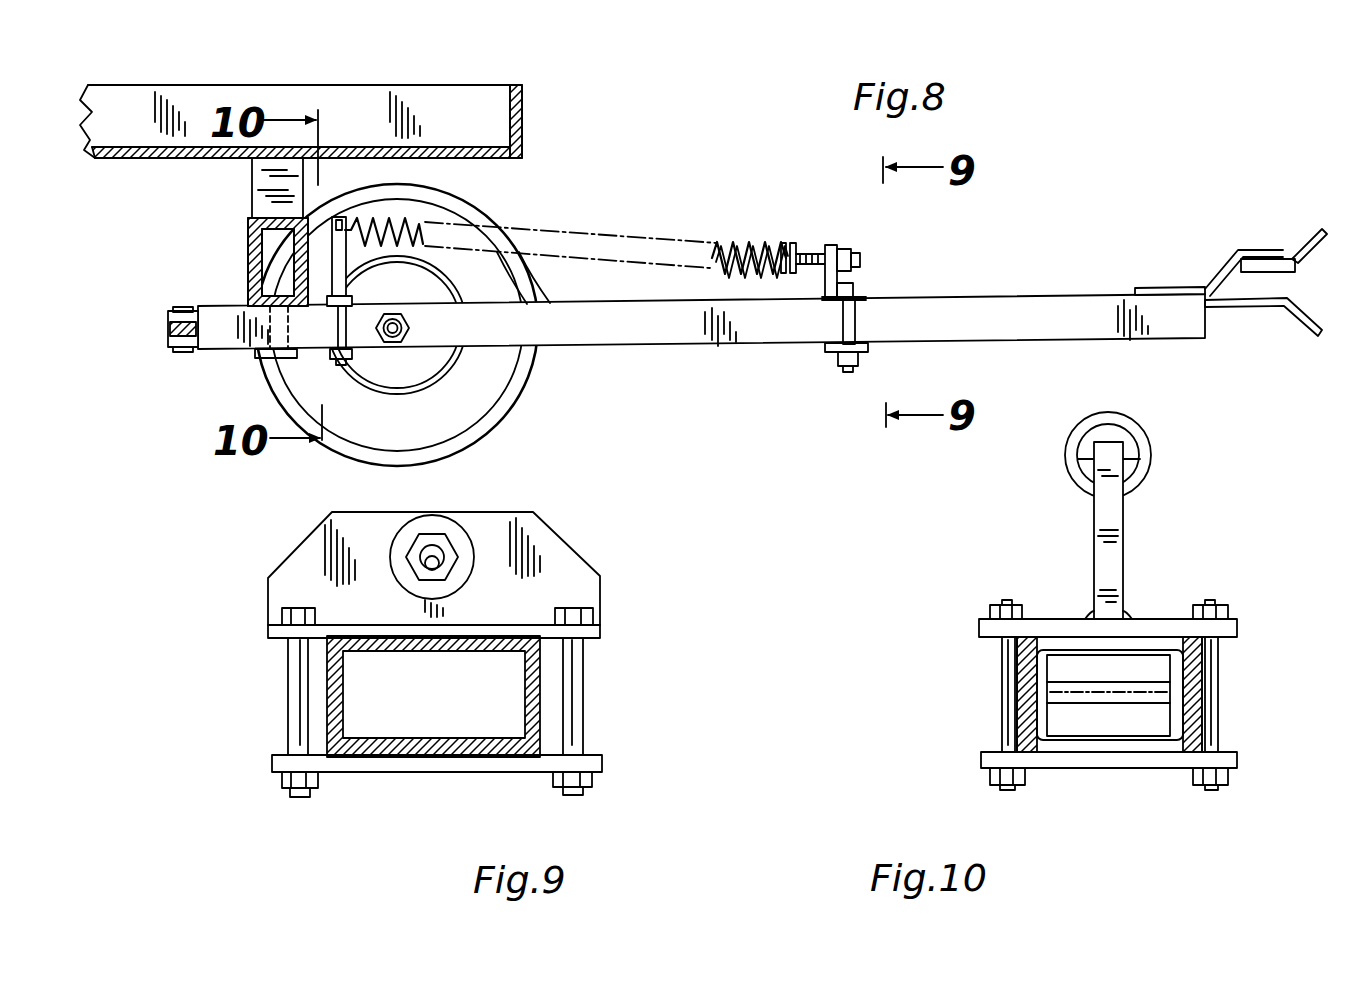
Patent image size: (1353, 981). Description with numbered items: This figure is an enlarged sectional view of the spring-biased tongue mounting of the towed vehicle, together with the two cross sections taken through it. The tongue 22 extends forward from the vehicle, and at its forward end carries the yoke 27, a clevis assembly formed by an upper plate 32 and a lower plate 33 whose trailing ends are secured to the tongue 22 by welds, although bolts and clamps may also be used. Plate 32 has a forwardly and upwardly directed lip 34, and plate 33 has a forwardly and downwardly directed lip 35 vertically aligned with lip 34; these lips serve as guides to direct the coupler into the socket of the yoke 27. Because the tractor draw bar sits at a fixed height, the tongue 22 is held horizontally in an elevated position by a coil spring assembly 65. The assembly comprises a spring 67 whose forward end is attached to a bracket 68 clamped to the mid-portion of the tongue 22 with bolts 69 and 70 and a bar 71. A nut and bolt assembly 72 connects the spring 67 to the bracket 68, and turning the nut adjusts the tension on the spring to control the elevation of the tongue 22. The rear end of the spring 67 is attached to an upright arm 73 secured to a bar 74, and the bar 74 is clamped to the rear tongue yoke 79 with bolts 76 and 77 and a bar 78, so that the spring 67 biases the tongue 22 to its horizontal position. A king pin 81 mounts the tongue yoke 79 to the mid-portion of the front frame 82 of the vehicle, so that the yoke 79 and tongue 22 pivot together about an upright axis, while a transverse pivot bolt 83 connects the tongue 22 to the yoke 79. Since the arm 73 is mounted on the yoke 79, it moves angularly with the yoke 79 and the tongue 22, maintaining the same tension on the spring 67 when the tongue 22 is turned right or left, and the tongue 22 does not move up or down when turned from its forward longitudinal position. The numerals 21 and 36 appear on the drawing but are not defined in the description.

In FIG. 8, the frame beam 21 is at (523, 118).
In FIG. 8, the tongue 22 is at (645, 345).
In FIG. 9, the tongue 22 is at (530, 697).
In FIG. 8, the yoke 27 is at (1258, 258).
In FIG. 8, the upper plate 32 is at (1230, 262).
In FIG. 8, the lower plate 33 is at (1252, 310).
In FIG. 8, the lip 34 is at (1318, 242).
In FIG. 8, the lip 35 is at (1318, 338).
In FIG. 8, the bar underside 36 is at (1296, 270).
In FIG. 8, the coil spring assembly 65 is at (772, 234).
In FIG. 8, the spring 67 is at (425, 222).
In FIG. 10, the spring 67 is at (1145, 455).
In FIG. 8, the bracket 68 is at (832, 248).
In FIG. 9, the bracket 68 is at (585, 584).
In FIG. 8, the bolt 69 is at (853, 322).
In FIG. 9, the bolt 69 is at (290, 695).
In FIG. 9, the bolt 70 is at (578, 712).
In FIG. 8, the bar 71 is at (830, 350).
In FIG. 9, the bar 71 is at (602, 760).
In FIG. 8, the nut and bolt assembly 72 is at (850, 257).
In FIG. 9, the nut and bolt assembly 72 is at (448, 532).
In FIG. 8, the upright arm 73 is at (340, 220).
In FIG. 10, the upright arm 73 is at (1123, 520).
In FIG. 8, the bar 74 is at (352, 302).
In FIG. 10, the bar 74 is at (1237, 625).
In FIG. 10, the bolt 76 is at (1002, 685).
In FIG. 8, the bolt 77 is at (338, 332).
In FIG. 10, the bolt 77 is at (1218, 685).
In FIG. 8, the bar 78 is at (358, 357).
In FIG. 10, the bar 78 is at (1237, 755).
In FIG. 8, the tongue yoke 79 is at (220, 345).
In FIG. 8, the king pin 81 is at (268, 360).
In FIG. 8, the front frame 82 is at (248, 240).
In FIG. 8, the transverse pivot bolt 83 is at (412, 328).